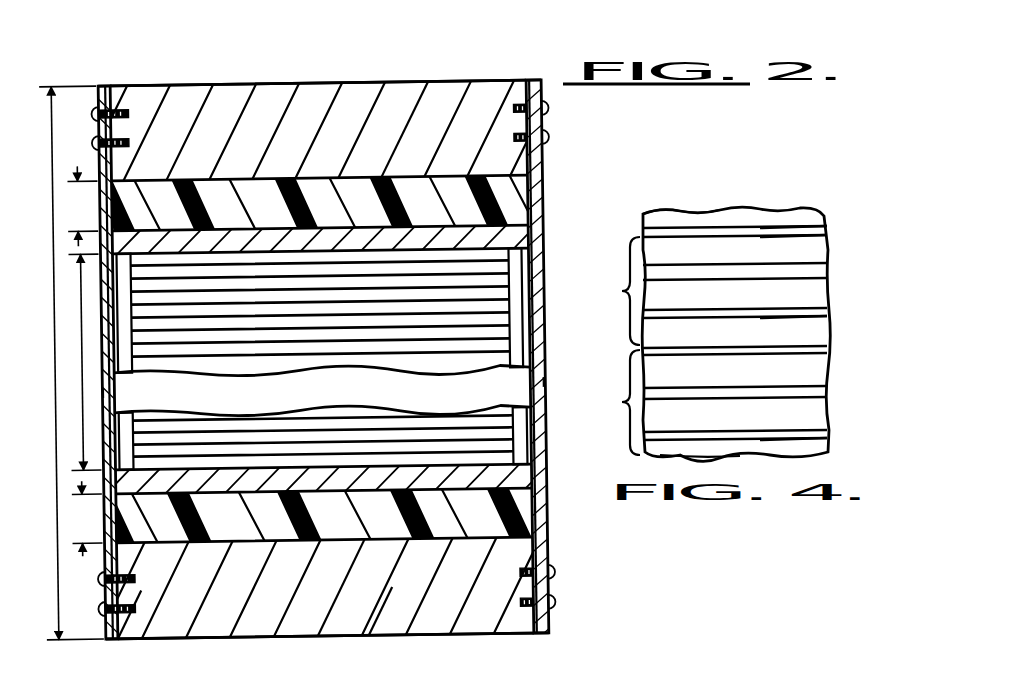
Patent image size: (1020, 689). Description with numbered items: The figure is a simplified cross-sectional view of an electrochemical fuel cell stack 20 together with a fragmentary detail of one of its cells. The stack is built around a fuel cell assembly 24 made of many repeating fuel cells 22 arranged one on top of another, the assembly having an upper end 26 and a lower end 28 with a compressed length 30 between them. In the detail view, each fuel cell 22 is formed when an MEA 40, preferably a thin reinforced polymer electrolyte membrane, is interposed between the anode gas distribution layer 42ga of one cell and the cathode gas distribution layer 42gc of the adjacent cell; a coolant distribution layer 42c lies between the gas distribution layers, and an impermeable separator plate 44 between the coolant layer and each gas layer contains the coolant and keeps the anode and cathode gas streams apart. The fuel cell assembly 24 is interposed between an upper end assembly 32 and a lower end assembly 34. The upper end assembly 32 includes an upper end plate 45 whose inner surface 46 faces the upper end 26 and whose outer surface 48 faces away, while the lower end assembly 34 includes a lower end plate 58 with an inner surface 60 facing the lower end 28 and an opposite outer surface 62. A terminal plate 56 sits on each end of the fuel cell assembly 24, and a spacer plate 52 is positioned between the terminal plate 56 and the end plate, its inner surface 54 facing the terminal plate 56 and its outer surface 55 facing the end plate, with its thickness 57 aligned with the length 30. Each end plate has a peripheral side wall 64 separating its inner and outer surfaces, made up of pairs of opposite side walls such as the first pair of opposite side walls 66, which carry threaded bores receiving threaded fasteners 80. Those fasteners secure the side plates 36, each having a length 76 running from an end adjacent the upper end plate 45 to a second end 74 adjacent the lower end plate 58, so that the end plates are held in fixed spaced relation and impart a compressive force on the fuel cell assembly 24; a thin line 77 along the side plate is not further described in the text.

In FIG. 2, the fuel cell stack 20 is at (437, 57).
In FIG. 2, the fuel cells 22 is at (497, 300).
In FIG. 4, the fuel cells 22 is at (611, 346).
In FIG. 2, the fuel cell assembly 24 is at (494, 273).
In FIG. 2, the upper end 26 is at (500, 241).
In FIG. 2, the lower end 28 is at (463, 472).
In FIG. 2, the compressed length 30 is at (85, 362).
In FIG. 2, the upper end assembly 32 is at (199, 156).
In FIG. 2, the lower end assembly 34 is at (168, 603).
In FIG. 2, the side plate 36 is at (99, 93).
In FIG. 4, the MEA 40 is at (788, 292).
In FIG. 4, the coolant distribution layer 42c is at (683, 218).
In FIG. 4, the anode gas distribution layer 42ga is at (824, 233).
In FIG. 4, the cathode gas distribution layer 42gc is at (787, 245).
In FIG. 2, the separator plate 44 is at (328, 683).
In FIG. 4, the separator plate 44 is at (751, 227).
In FIG. 2, the upper end plate 45 is at (470, 82).
In FIG. 2, the inner surface 46 is at (338, 180).
In FIG. 2, the outer surface 48 is at (351, 77).
In FIG. 2, the spacer plate 52 is at (403, 527).
In FIG. 2, the inner surface 54 is at (278, 229).
In FIG. 2, the outer surface 55 is at (246, 176).
In FIG. 2, the terminal plate 56 is at (392, 228).
In FIG. 2, the thickness 57 is at (580, 197).
In FIG. 2, the lower end plate 58 is at (208, 633).
In FIG. 2, the inner surface 60 is at (374, 524).
In FIG. 2, the outer surface 62 is at (255, 641).
In FIG. 2, the peripheral side wall 64 is at (128, 82).
In FIG. 2, the first pair of opposite side walls 66 is at (135, 123).
In FIG. 2, the second end 74 is at (553, 556).
In FIG. 2, the length 76 is at (71, 363).
In FIG. 2, the plate inner face 77 is at (545, 166).
In FIG. 2, the threaded fasteners 80 is at (550, 112).